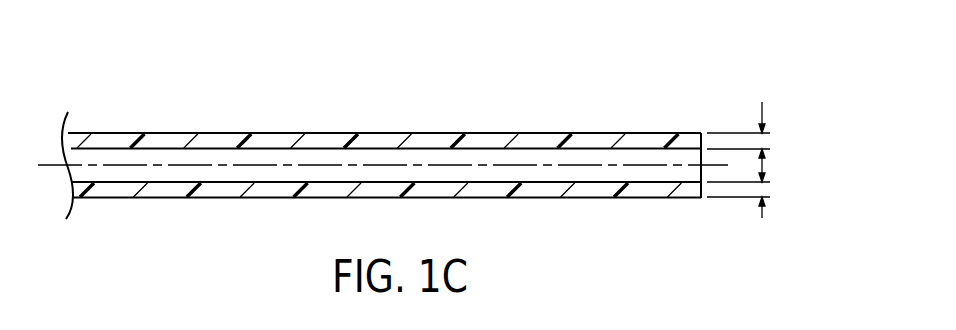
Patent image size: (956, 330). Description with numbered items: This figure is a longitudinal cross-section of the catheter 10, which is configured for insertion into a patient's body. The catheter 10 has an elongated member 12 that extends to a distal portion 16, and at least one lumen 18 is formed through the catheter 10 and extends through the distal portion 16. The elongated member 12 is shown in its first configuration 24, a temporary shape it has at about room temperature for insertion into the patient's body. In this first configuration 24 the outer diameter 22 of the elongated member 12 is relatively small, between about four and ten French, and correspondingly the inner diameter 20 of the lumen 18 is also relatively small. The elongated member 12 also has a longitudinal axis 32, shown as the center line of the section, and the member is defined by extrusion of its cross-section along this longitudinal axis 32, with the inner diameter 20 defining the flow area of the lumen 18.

The catheter 10 is at (518, 78).
The elongated member 12 is at (275, 138).
The distal portion 16 is at (347, 138).
The first configuration 24 is at (427, 138).
The lumen 18 is at (642, 172).
The longitudinal axis 32 is at (577, 167).
The inner diameter 20 is at (762, 163).
The outer diameter 22 is at (762, 113).